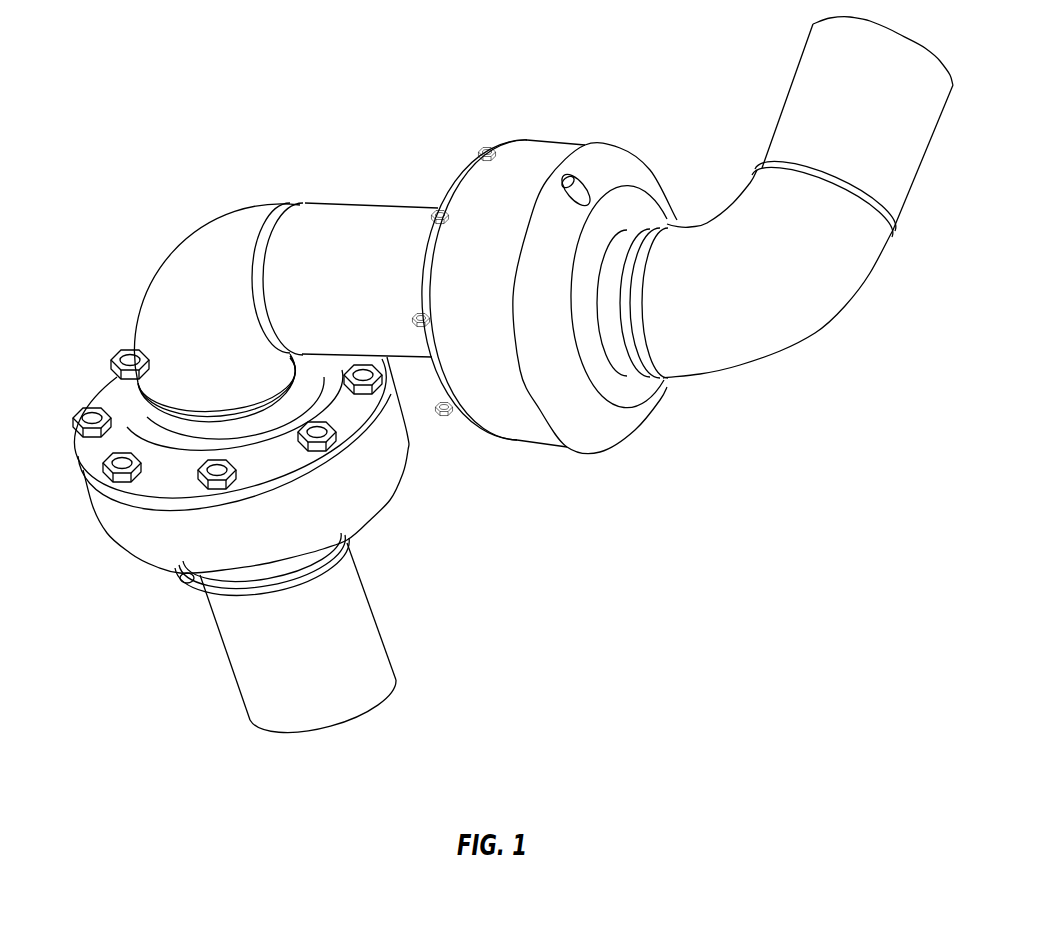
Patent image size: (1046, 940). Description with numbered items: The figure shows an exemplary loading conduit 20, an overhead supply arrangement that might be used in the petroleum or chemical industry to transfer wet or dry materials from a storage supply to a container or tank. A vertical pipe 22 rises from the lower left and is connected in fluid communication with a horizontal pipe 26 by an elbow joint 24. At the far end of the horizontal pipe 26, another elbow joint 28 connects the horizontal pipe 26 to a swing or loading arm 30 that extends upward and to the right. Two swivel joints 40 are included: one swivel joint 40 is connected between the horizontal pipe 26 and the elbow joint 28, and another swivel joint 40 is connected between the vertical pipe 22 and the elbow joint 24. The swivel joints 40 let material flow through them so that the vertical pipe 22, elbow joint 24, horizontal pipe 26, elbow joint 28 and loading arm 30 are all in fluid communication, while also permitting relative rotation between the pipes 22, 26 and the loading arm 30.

The loading conduit 20 is at (274, 166).
The vertical pipe 22 is at (228, 650).
The elbow joint 24 is at (193, 238).
The horizontal pipe 26 is at (368, 213).
The elbow joint 28 is at (799, 333).
The loading arm 30 is at (792, 97).
The swivel joint 40 is at (554, 140).